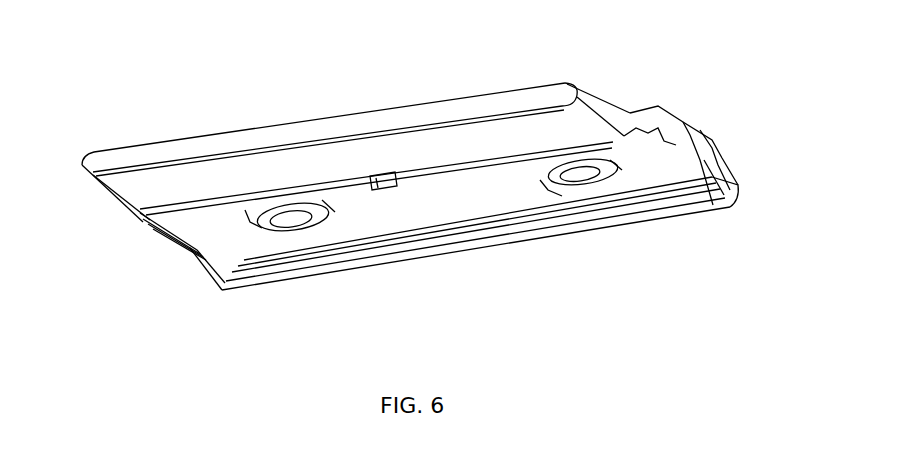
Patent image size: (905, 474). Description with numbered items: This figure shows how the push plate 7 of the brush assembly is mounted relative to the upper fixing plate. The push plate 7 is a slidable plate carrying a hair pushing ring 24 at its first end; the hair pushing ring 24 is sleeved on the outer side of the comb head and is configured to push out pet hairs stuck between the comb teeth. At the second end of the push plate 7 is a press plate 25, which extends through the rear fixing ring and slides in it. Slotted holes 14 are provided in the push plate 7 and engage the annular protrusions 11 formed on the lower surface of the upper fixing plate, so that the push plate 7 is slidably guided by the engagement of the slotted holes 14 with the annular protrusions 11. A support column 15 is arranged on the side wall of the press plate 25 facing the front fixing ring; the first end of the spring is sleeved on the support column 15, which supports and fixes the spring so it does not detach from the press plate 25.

The push plate 7 is at (492, 200).
The press plate 25 is at (557, 123).
The hair pushing ring 24 is at (697, 137).
The slotted holes 14 is at (247, 210).
The annular protrusions 11 is at (318, 228).
The support column 15 is at (393, 198).